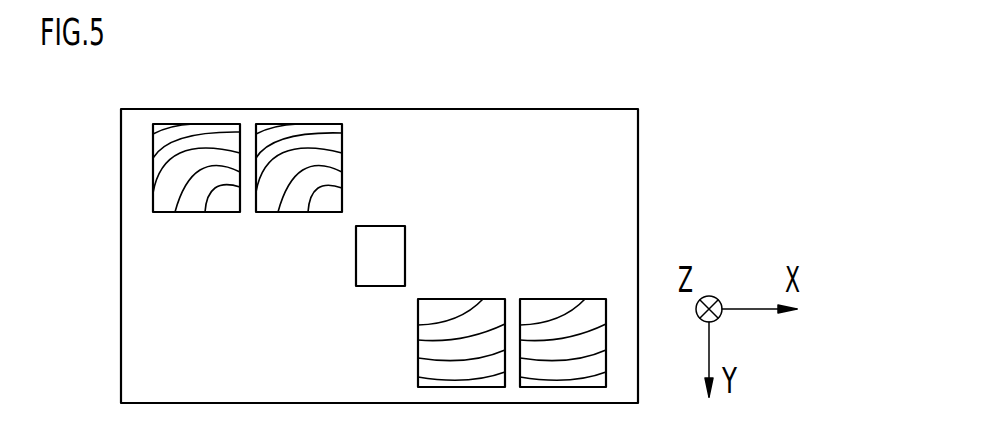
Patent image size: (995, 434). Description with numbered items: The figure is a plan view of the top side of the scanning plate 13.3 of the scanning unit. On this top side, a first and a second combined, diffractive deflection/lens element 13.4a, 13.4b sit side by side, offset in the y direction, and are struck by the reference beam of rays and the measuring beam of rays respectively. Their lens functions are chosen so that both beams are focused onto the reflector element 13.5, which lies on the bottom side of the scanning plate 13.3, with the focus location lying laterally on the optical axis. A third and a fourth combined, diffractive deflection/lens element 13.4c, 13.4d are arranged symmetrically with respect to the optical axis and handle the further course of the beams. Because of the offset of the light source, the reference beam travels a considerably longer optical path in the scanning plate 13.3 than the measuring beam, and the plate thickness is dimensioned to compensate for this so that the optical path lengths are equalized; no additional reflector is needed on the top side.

The scanning plate 13.3 is at (617, 148).
The first combined diffractive deflection/lens element 13.4a is at (193, 203).
The second combined diffractive deflection/lens element 13.4b is at (303, 203).
The third combined diffractive deflection/lens element 13.4c is at (458, 317).
The fourth combined diffractive deflection/lens element 13.4d is at (575, 318).
The reflector element 13.5 is at (388, 242).